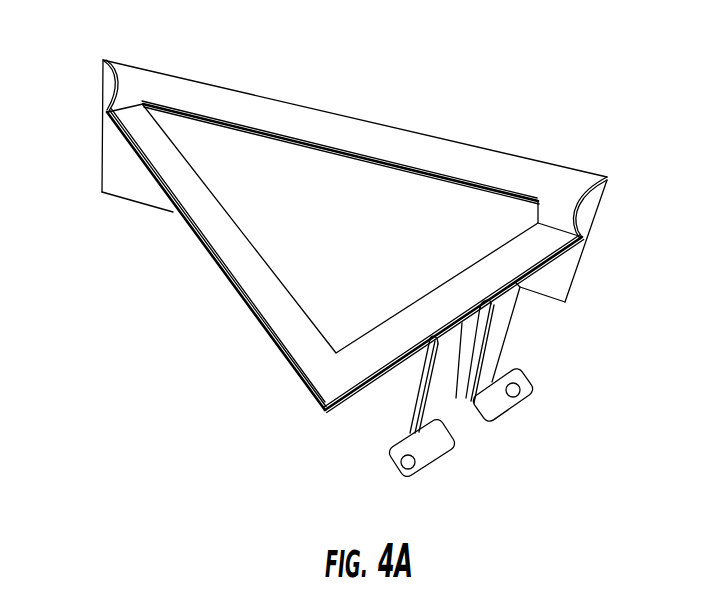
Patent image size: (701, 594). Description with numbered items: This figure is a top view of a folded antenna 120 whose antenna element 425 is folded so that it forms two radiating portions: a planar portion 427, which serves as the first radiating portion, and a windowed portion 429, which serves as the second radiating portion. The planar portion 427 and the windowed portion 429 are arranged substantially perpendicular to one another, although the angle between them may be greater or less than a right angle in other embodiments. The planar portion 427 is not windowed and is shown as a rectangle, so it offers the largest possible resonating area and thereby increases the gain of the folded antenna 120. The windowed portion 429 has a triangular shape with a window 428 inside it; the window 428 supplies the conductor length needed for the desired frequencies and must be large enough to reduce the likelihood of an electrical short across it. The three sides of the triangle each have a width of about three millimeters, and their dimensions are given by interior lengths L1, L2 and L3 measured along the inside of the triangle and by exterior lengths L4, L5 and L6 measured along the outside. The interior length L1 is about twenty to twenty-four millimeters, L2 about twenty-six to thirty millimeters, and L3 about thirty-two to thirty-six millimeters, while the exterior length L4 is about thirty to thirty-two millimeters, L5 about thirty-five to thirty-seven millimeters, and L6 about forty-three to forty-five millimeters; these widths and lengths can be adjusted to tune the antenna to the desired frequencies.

The folded antenna 120 is at (336, 241).
The planar portion 427 is at (220, 135).
The interior length L3 is at (360, 153).
The windowed portion 429 is at (443, 152).
The exterior length L6 is at (540, 158).
The window 428 is at (428, 215).
The interior length L1 is at (495, 305).
The exterior length L4 is at (417, 347).
The interior length L2 is at (272, 277).
The exterior length L5 is at (172, 213).
The antenna element 425 is at (157, 150).